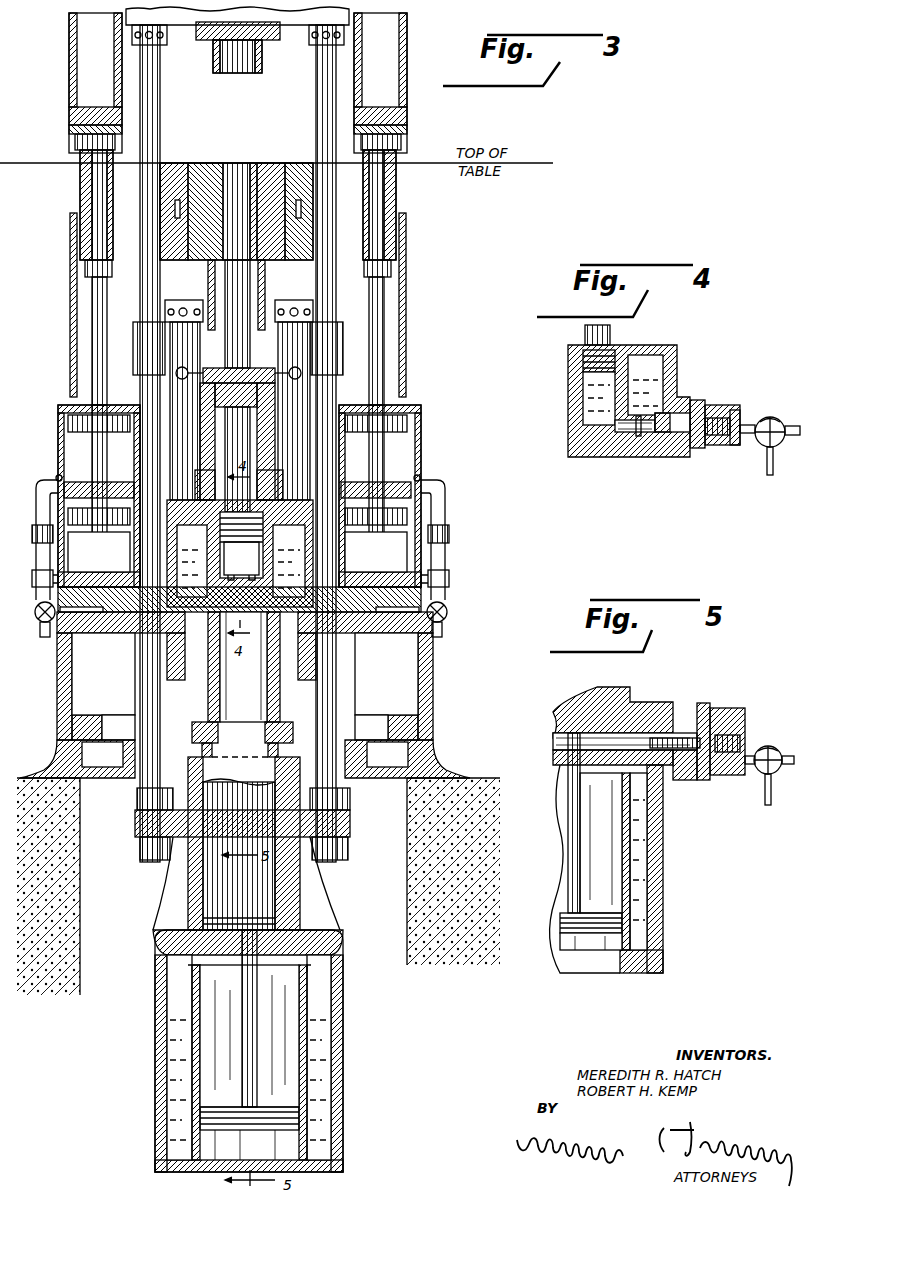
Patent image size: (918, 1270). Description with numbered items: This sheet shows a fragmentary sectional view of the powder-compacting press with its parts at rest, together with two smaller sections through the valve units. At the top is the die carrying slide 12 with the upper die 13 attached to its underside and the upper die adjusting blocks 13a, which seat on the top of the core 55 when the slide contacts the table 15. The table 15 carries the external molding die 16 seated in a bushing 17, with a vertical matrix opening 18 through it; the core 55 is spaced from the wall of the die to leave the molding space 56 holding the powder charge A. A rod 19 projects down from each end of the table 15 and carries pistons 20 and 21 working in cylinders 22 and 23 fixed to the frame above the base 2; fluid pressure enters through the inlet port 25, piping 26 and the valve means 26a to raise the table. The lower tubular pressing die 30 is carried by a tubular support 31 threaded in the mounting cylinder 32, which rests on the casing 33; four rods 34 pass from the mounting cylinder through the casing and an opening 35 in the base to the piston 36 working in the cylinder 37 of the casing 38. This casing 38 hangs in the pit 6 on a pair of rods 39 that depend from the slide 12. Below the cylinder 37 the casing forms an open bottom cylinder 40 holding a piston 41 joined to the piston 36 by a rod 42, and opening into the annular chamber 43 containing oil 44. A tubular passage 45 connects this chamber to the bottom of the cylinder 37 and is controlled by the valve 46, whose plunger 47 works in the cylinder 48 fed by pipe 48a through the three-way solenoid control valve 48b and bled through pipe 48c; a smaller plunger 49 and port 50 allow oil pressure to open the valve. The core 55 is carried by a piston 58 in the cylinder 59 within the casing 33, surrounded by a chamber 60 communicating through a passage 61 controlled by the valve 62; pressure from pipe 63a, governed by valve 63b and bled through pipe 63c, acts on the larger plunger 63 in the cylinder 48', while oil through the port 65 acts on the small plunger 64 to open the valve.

In FIG. 3, the base 2 is at (433, 720).
In FIG. 3, the pit 6 is at (106, 896).
In FIG. 3, the die carrying slide 12 is at (172, 24).
In FIG. 3, the upper die 13 is at (263, 55).
In FIG. 3, the upper die adjusting blocks 13a is at (157, 58).
In FIG. 3, the table 15 is at (236, 206).
In FIG. 3, the external molding die 16 is at (269, 253).
In FIG. 3, the bushing 17 is at (286, 262).
In FIG. 3, the matrix opening 18 is at (212, 256).
In FIG. 3, the rod 19 is at (102, 326).
In FIG. 3, the piston 20 is at (241, 496).
In FIG. 3, the piston 21 is at (60, 511).
In FIG. 3, the cylinder 22 is at (75, 455).
In FIG. 3, the cylinder 23 is at (124, 562).
In FIG. 3, the fluid pressure inlet port 25 is at (58, 477).
In FIG. 3, the piping 26 is at (37, 553).
In FIG. 3, the valve means 26a is at (40, 620).
In FIG. 3, the lower tubular pressing die 30 is at (262, 290).
In FIG. 3, the tubular support 31 is at (283, 380).
In FIG. 3, the mounting cylinder 32 is at (276, 426).
In FIG. 3, the casing 33 is at (193, 552).
In FIG. 3, the rods 34 is at (221, 700).
In FIG. 3, the opening 35 is at (310, 705).
In FIG. 3, the piston 36 is at (253, 815).
In FIG. 5, the piston 36 is at (606, 702).
In FIG. 3, the cylinder 37 is at (298, 920).
In FIG. 5, the cylinder 37 is at (553, 746).
In FIG. 3, the casing 38 is at (265, 1051).
In FIG. 5, the casing 38 is at (663, 914).
In FIG. 3, the rods 39 is at (151, 706).
In FIG. 3, the open bottom cylinder 40 is at (284, 1054).
In FIG. 5, the open bottom cylinder 40 is at (616, 880).
In FIG. 3, the piston 41 is at (262, 1128).
In FIG. 5, the piston 41 is at (560, 938).
In FIG. 3, the rod 42 is at (255, 1002).
In FIG. 5, the rod 42 is at (568, 856).
In FIG. 3, the annular chamber 43 is at (321, 990).
In FIG. 5, the annular chamber 43 is at (627, 799).
In FIG. 3, the oil 44 is at (324, 1071).
In FIG. 5, the oil 44 is at (646, 976).
In FIG. 5, the tubular passage 45 is at (650, 855).
In FIG. 5, the valve 46 is at (690, 740).
In FIG. 5, the plunger 47 is at (745, 732).
In FIG. 5, the cylinder 48 is at (763, 754).
In FIG. 5, the pipe 48a is at (757, 775).
In FIG. 5, the three-way solenoid control valve 48b is at (785, 742).
In FIG. 5, the pipe 48c is at (766, 806).
In FIG. 4, the cylinder 48' is at (711, 448).
In FIG. 5, the plunger 49 is at (701, 775).
In FIG. 5, the port 50 is at (675, 775).
In FIG. 3, the core 55 is at (240, 163).
In FIG. 3, the molding space 56 is at (252, 168).
In FIG. 3, the piston 58 is at (250, 565).
In FIG. 4, the piston 58 is at (583, 372).
In FIG. 4, the cylinder 59 is at (583, 425).
In FIG. 4, the chamber 60 is at (662, 380).
In FIG. 4, the passage 61 is at (610, 452).
In FIG. 4, the valve 62 is at (647, 450).
In FIG. 4, the larger plunger 63 is at (763, 440).
In FIG. 4, the pipe 63a is at (793, 448).
In FIG. 4, the valve 63b is at (775, 418).
In FIG. 4, the pipe 63c is at (766, 472).
In FIG. 4, the small plunger 64 is at (700, 410).
In FIG. 4, the port 65 is at (657, 448).
In FIG. 3, the powder charge A is at (219, 158).